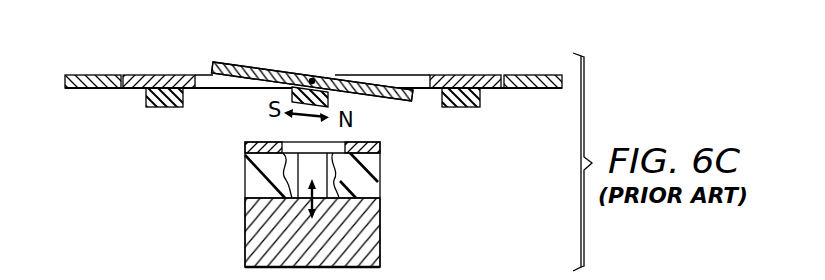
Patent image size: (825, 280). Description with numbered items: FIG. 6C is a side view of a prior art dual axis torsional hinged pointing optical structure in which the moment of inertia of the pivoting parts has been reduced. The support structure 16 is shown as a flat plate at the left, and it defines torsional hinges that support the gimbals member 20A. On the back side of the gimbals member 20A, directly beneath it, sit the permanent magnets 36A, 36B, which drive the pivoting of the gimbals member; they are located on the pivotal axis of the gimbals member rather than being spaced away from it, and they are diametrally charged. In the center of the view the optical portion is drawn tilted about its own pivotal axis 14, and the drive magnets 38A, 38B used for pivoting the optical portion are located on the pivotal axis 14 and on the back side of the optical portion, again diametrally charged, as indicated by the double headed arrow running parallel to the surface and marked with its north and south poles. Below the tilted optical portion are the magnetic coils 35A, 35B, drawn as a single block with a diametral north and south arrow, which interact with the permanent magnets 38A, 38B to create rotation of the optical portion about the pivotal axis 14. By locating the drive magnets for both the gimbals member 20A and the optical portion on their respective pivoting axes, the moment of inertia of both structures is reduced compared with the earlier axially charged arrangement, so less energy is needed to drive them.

The pivotal axis 14 is at (318, 73).
The support structure 16 is at (82, 89).
The gimbals member 20A is at (135, 75).
The magnetic coil 35A is at (276, 207).
The magnetic coil 35B is at (245, 223).
The permanent magnet 36A is at (163, 108).
The permanent magnet 36B is at (460, 108).
The drive magnet 38A is at (366, 124).
The drive magnet 38B is at (332, 98).